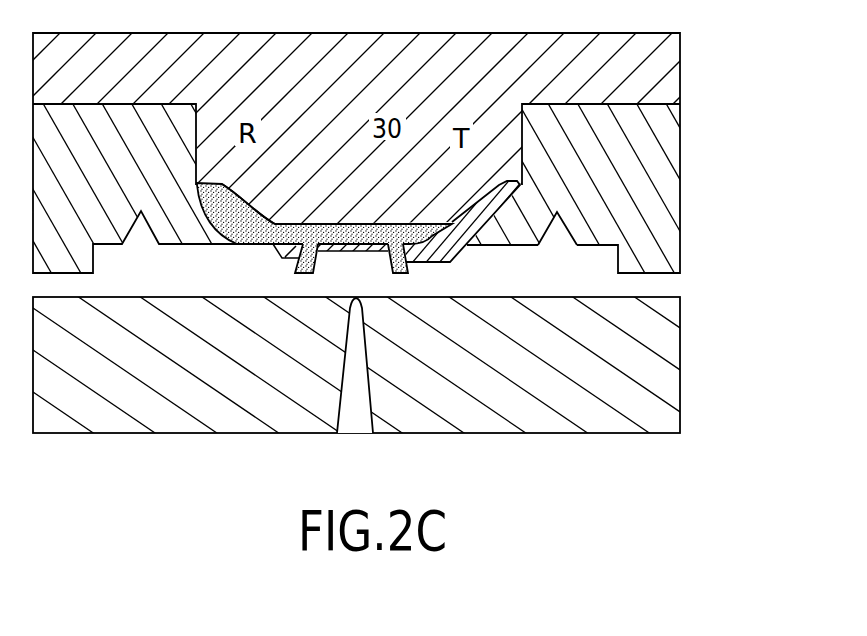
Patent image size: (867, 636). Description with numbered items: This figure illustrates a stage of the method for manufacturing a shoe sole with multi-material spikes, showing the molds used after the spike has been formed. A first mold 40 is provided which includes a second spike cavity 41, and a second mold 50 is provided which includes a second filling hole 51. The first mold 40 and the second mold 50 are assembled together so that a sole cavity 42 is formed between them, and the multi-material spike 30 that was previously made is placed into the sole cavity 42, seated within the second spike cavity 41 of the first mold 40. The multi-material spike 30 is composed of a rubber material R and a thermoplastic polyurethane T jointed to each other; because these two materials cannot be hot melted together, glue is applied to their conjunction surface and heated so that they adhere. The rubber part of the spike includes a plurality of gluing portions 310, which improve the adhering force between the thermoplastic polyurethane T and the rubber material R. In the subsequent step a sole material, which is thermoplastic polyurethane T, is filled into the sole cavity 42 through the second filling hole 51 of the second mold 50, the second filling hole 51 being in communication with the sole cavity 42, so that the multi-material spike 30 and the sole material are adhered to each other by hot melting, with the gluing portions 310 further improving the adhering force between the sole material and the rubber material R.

The first mold 40 is at (632, 115).
The second spike cavity 41 is at (523, 200).
The sole cavity 42 is at (583, 270).
The multi-material spike 30 is at (355, 222).
The gluing portions 310 is at (297, 262).
The second mold 50 is at (665, 377).
The second filling hole 51 is at (352, 387).
The rubber material R is at (229, 193).
The thermoplastic polyurethane T is at (487, 212).